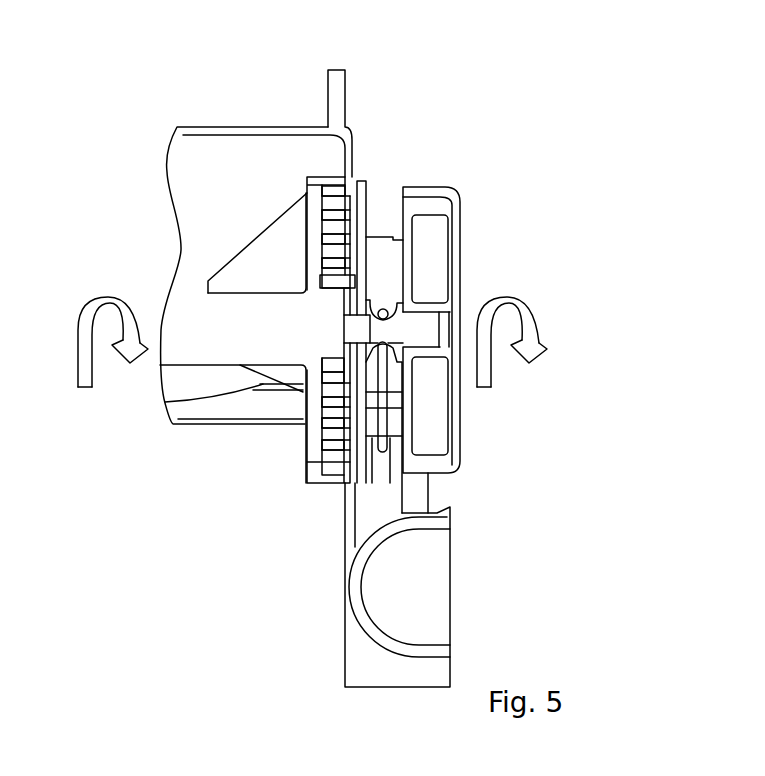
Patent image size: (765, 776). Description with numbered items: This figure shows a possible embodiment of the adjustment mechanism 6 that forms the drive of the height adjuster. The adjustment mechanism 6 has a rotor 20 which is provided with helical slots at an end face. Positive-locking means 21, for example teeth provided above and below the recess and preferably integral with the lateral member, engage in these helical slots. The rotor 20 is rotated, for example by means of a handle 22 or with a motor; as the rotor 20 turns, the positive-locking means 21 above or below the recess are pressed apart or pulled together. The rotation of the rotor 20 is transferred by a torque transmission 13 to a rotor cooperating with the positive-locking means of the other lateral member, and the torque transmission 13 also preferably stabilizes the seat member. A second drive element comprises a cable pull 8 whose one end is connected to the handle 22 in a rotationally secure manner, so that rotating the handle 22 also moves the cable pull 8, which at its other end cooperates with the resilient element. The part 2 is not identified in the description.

The lower housing / tube section 2 is at (452, 587).
The adjustment mechanism 6 is at (482, 131).
The cable pull 8 is at (383, 382).
The torque transmission 13 is at (203, 325).
The rotor 20 is at (272, 128).
The positive-locking means 21 is at (340, 210).
The handle 22 is at (455, 263).